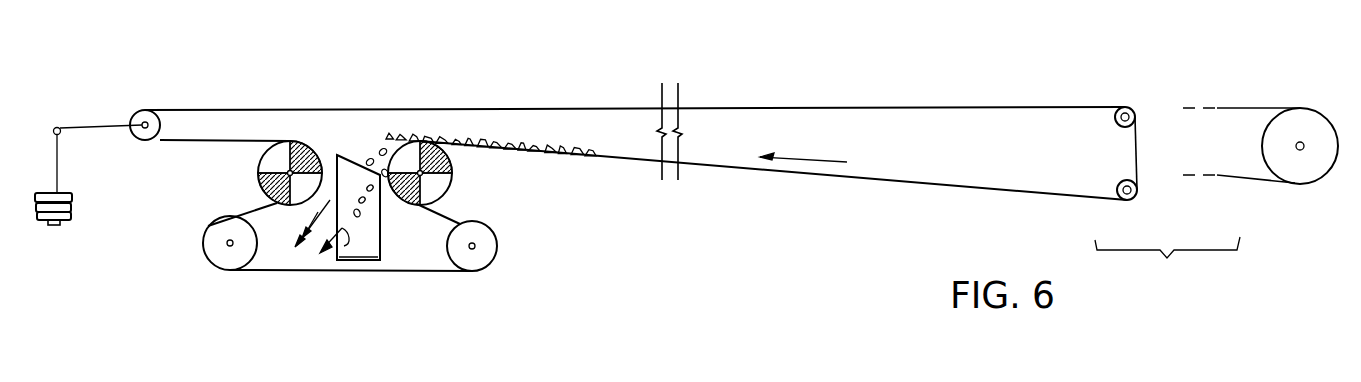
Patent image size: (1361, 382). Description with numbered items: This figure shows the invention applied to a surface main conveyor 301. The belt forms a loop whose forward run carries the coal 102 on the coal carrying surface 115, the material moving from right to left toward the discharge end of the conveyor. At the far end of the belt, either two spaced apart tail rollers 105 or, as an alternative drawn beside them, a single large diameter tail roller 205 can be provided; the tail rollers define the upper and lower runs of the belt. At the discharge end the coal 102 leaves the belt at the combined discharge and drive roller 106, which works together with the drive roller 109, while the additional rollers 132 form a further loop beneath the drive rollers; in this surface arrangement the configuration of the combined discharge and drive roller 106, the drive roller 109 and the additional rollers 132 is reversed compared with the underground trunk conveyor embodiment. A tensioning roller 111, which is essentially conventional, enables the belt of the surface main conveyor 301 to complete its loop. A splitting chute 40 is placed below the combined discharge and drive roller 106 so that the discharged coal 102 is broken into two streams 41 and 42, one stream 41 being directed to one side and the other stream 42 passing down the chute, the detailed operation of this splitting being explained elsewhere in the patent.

The surface main conveyor 301 is at (907, 108).
The coal carrying surface 115 is at (967, 110).
The tensioning roller 111 is at (155, 120).
The drive roller 109 is at (277, 153).
The combined discharge and drive roller 106 is at (446, 203).
The additional rollers 132 is at (212, 245).
The splitting chute 40 is at (373, 242).
The second stream 42 is at (338, 230).
The first stream 41 is at (313, 213).
The coal 102 is at (527, 143).
The tail rollers 105 is at (1117, 123).
The single large diameter tail roller 205 is at (1305, 165).